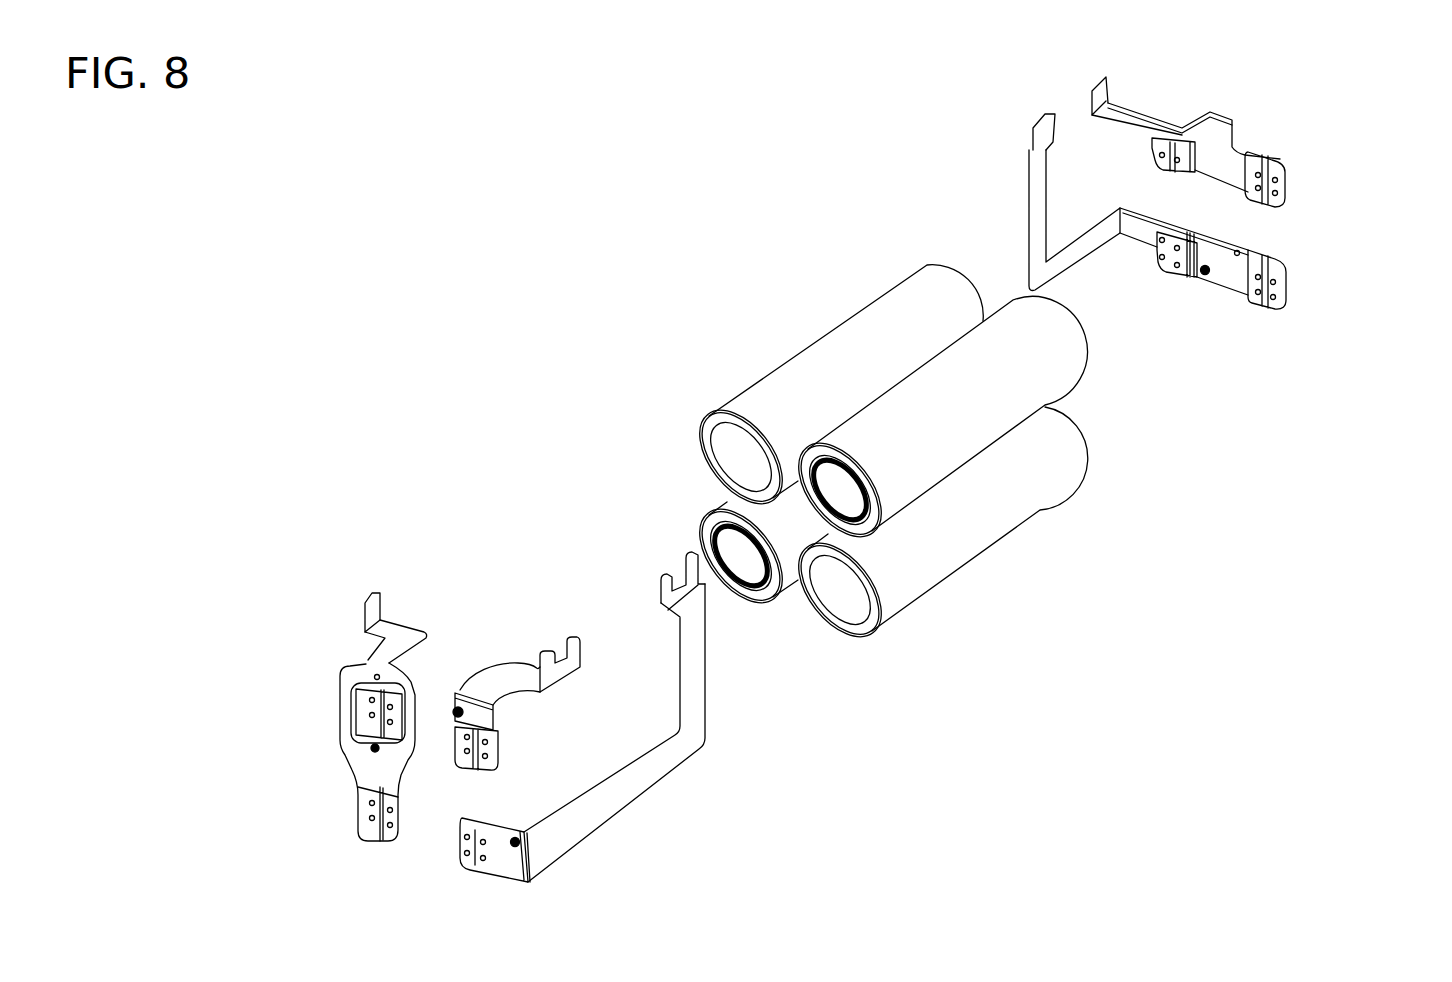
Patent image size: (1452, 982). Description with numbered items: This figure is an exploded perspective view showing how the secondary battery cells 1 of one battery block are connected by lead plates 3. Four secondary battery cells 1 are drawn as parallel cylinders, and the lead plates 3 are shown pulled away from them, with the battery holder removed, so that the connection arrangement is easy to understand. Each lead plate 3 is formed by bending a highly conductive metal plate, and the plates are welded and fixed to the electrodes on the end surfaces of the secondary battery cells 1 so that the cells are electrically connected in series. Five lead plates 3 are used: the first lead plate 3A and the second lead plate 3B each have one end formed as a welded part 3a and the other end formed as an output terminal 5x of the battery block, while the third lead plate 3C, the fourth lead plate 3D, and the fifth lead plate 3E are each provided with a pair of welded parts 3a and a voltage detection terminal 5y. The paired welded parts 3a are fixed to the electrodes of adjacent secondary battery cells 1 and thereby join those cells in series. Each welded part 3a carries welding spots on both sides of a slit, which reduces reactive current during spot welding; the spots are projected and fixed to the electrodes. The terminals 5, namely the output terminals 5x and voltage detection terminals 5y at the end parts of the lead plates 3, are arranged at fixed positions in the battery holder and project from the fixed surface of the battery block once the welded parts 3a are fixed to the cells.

The secondary battery cell 1 is at (828, 355).
The lead plate 3 is at (1392, 95).
The first lead plate 3A is at (567, 720).
The second lead plate 3B is at (653, 838).
The third lead plate 3C is at (423, 872).
The fourth lead plate 3D is at (1297, 139).
The fifth lead plate 3E is at (1309, 261).
The welded part 3a is at (1250, 172).
The terminal 5 is at (918, 62).
The output terminal 5x is at (572, 635).
The voltage detection terminal 5y is at (1092, 92).